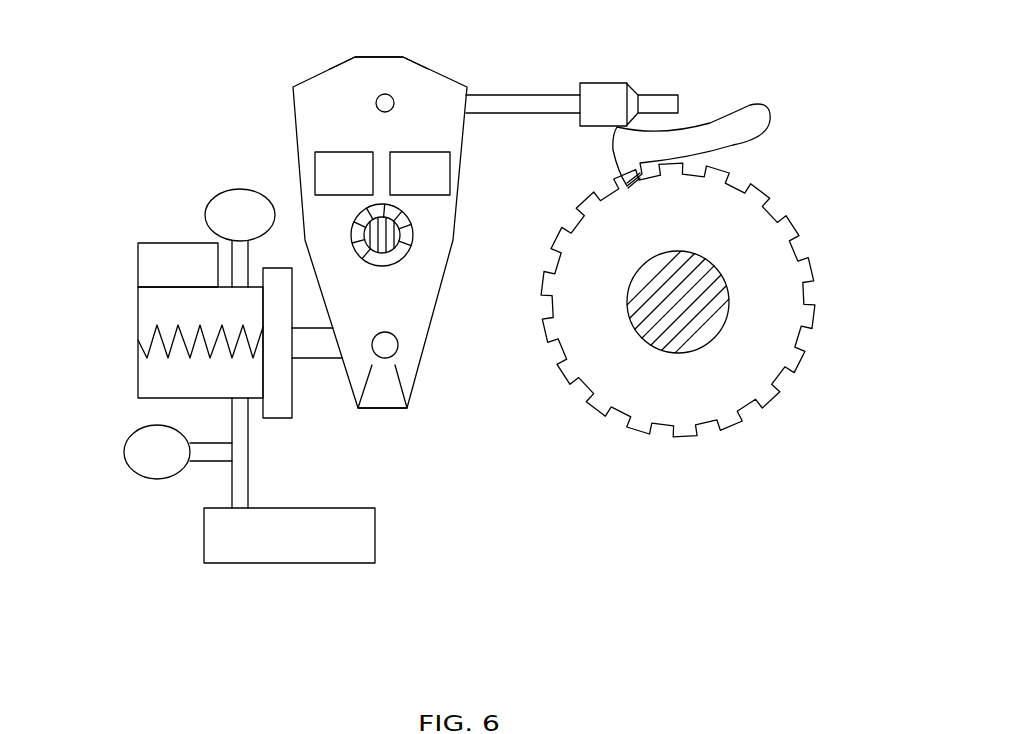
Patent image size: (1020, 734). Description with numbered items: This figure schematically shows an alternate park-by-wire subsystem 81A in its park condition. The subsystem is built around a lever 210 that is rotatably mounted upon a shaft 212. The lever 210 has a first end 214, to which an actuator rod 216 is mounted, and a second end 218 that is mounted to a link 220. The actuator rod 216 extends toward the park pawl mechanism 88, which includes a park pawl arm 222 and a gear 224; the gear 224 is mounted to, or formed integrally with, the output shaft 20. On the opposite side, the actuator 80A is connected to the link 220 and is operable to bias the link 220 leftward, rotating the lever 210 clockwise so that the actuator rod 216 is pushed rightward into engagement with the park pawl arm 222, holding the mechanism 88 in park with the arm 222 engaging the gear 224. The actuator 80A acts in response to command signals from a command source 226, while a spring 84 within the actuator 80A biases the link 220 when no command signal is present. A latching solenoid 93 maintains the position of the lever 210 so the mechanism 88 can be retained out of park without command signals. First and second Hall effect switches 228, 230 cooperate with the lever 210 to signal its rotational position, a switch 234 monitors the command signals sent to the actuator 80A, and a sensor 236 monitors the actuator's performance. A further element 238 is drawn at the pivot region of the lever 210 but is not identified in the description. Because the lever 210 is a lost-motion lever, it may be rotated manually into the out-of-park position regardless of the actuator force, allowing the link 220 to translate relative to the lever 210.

The park-by-wire subsystem 81A is at (150, 107).
The lever 210 is at (307, 177).
The first end 214 is at (417, 72).
The actuator rod 216 is at (543, 105).
The second end 218 is at (400, 387).
The link 220 is at (318, 351).
The park pawl arm 222 is at (705, 132).
The gear 224 is at (790, 294).
The command source 226 is at (289, 480).
The first Hall effect switch 228 is at (344, 173).
The second Hall effect switch 230 is at (420, 173).
The switch 234 is at (178, 452).
The sensor 236 is at (240, 238).
The pivot bearing 238 is at (405, 242).
The shaft 212 is at (403, 213).
The output shaft 20 is at (718, 315).
The park pawl mechanism 88 is at (802, 160).
The latching solenoid 93 is at (178, 265).
The spring 84 is at (175, 348).
The actuator 80A is at (155, 387).